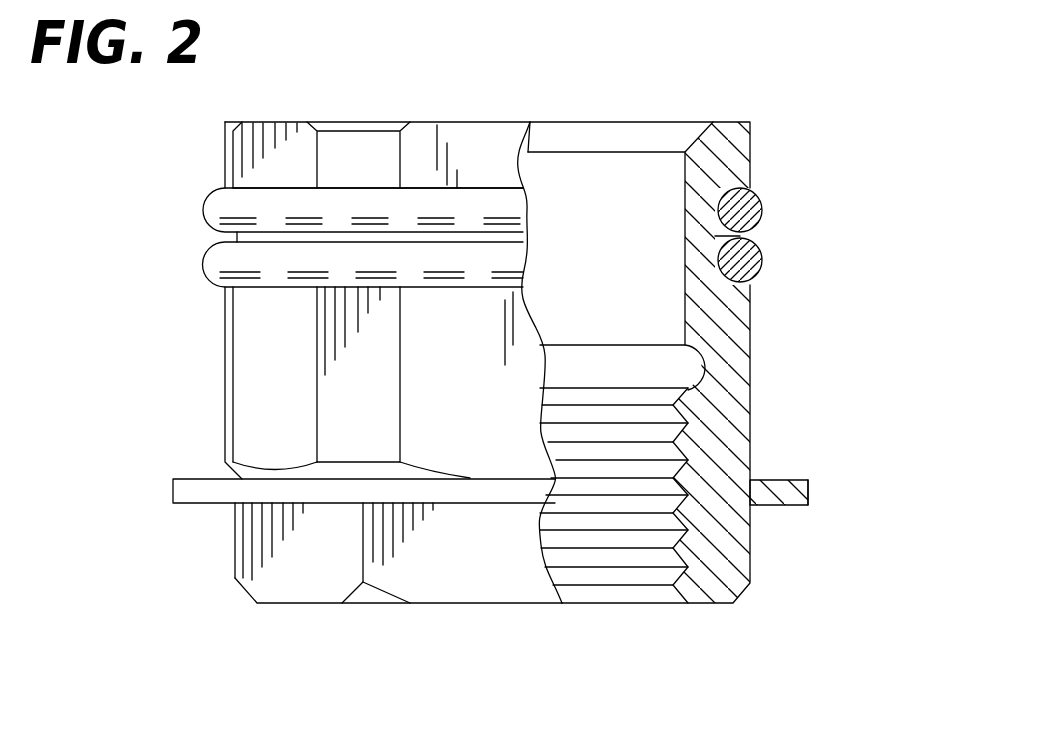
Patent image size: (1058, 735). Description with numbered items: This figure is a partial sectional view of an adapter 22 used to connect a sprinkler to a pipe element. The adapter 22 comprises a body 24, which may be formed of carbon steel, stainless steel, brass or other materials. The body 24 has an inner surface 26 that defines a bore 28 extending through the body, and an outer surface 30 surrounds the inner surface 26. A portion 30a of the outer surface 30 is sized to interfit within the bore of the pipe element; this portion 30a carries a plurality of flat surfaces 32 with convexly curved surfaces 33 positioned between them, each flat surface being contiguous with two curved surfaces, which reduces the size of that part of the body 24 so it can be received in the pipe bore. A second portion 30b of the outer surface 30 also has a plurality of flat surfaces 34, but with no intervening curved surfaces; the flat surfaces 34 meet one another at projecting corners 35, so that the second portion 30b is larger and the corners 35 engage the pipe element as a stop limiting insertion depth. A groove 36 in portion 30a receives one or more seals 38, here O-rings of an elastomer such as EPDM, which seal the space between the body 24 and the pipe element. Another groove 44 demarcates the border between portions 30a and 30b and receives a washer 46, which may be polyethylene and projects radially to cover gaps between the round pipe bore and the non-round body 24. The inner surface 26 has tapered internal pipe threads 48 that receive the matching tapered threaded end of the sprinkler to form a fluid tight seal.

The adapter 22 is at (235, 573).
The body 24 is at (228, 459).
The inner surface 26 is at (650, 162).
The bore 28 is at (547, 165).
The outer surface 30 is at (752, 312).
The portion of outer surface 30a is at (222, 308).
The second portion of outer surface 30b is at (232, 548).
The flat surfaces 32 is at (333, 387).
The curved surfaces 33 is at (523, 298).
The flat surfaces 34 is at (443, 515).
The projecting corners 35 is at (365, 562).
The groove 36 is at (762, 236).
The seals 38 is at (362, 196).
The groove 44 is at (750, 480).
The washer 46 is at (795, 496).
The tapered internal pipe threads 48 is at (660, 553).